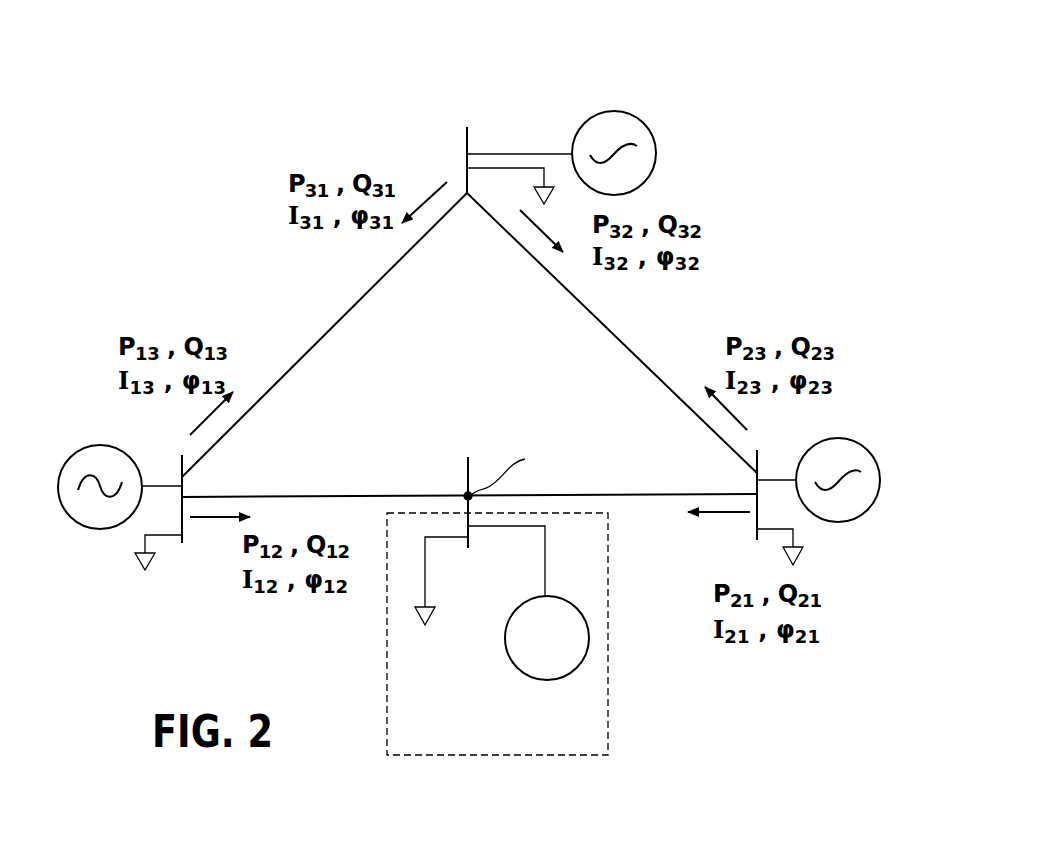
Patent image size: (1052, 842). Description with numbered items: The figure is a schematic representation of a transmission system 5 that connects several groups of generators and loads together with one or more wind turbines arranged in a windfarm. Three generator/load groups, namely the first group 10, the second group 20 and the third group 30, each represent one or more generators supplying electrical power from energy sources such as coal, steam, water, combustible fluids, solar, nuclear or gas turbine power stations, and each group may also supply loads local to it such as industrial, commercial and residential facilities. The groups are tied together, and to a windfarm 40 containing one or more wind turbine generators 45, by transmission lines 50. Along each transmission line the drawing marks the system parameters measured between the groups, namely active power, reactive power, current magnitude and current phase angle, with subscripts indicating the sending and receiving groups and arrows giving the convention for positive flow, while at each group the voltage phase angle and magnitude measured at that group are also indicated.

The transmission system 5 is at (151, 180).
The Group 1 10 is at (65, 397).
The Group 2 20 is at (890, 447).
The Group 3 30 is at (648, 96).
The windfarm 40 is at (387, 685).
The wind turbine generator 45 is at (574, 651).
The transmission lines 50 is at (308, 351).